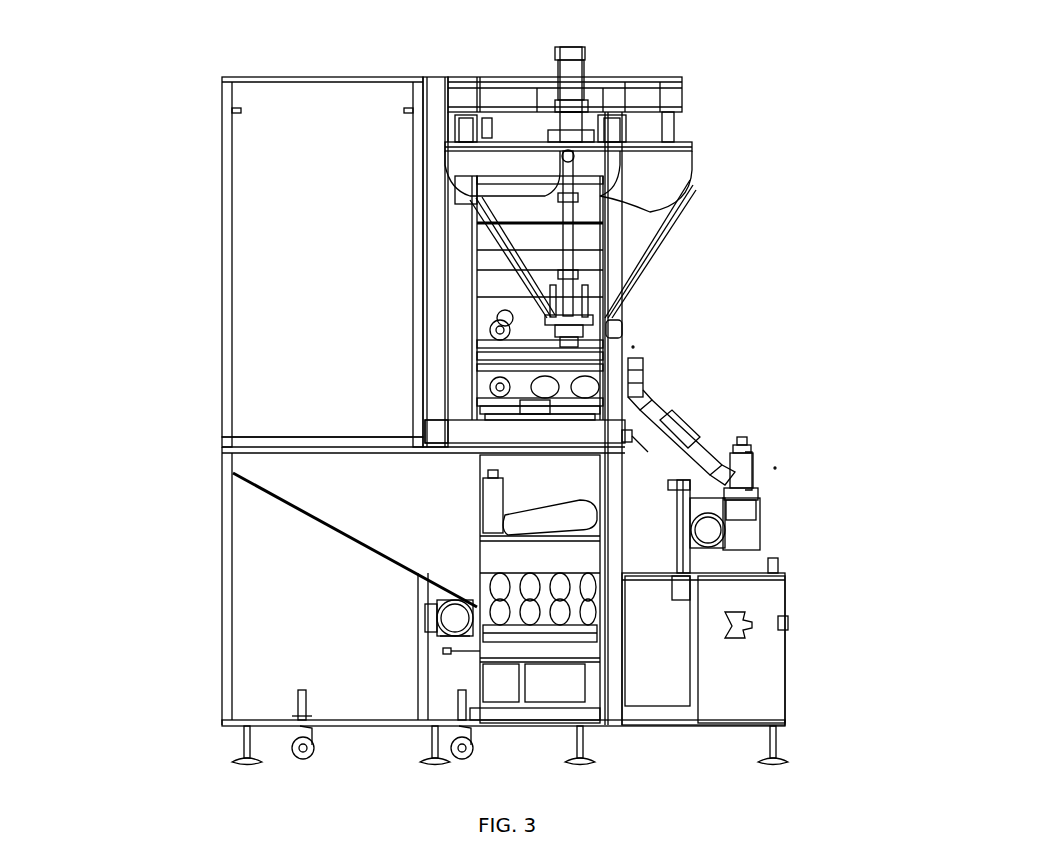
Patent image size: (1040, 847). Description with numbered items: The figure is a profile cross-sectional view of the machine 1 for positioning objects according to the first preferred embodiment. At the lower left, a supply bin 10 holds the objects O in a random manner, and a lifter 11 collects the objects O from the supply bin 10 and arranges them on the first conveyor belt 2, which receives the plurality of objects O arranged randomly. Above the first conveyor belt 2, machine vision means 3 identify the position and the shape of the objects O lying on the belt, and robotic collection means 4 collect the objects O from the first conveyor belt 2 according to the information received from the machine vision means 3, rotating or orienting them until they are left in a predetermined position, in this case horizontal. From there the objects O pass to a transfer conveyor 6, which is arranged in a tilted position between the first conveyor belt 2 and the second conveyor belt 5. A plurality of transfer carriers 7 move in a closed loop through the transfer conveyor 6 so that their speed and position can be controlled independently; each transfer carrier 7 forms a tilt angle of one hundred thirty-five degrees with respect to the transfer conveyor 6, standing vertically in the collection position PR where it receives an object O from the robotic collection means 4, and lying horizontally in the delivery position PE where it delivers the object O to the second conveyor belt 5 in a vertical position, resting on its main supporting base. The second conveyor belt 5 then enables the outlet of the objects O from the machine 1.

The machine 1 is at (155, 89).
The first conveyor belt 2 is at (477, 397).
The machine vision means 3 is at (580, 200).
The robotic collection means 4 is at (575, 272).
The second conveyor belt 5 is at (762, 505).
The transfer conveyor 6 is at (672, 423).
The transfer carrier 7 is at (637, 358).
The supply bin 10 is at (365, 538).
The lifter 11 is at (490, 288).
The collection position PR is at (633, 347).
The delivery position PE is at (775, 468).
The object O is at (752, 452).